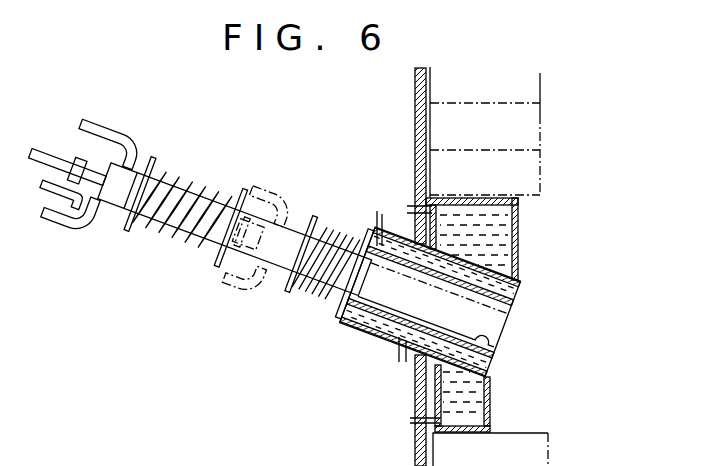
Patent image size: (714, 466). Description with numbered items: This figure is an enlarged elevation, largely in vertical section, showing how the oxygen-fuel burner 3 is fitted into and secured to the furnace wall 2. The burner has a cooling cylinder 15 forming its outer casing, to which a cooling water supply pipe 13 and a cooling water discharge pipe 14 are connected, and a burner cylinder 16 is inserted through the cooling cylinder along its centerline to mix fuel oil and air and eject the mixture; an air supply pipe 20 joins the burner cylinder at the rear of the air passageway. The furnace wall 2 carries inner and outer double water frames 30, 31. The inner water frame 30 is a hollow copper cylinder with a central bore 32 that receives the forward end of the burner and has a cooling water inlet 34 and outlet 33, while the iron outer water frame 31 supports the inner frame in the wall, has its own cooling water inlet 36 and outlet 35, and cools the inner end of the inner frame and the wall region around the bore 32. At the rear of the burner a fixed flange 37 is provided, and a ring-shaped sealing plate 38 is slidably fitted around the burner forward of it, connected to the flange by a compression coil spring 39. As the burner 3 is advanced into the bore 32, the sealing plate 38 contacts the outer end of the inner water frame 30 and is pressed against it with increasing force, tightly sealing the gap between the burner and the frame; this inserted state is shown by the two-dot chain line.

The furnace wall 2 is at (415, 111).
The oxygen-fuel burner 3 is at (278, 236).
The cooling water supply pipe 13 is at (99, 127).
The cooling water discharge pipe 14 is at (52, 221).
The cooling cylinder 15 is at (122, 208).
The burner cylinder 16 is at (48, 150).
The air supply pipe 20 is at (40, 192).
The inner water frame 30 is at (518, 292).
The outer water frame 31 is at (519, 224).
The central bore 32 is at (487, 337).
The cooling water outlet 33 is at (378, 211).
The cooling water inlet 34 is at (399, 363).
The cooling water outlet 35 is at (409, 204).
The cooling water inlet 36 is at (410, 421).
The fixed flange 37 is at (152, 155).
The sealing plate 38 is at (242, 187).
The compression coil spring 39 is at (148, 224).